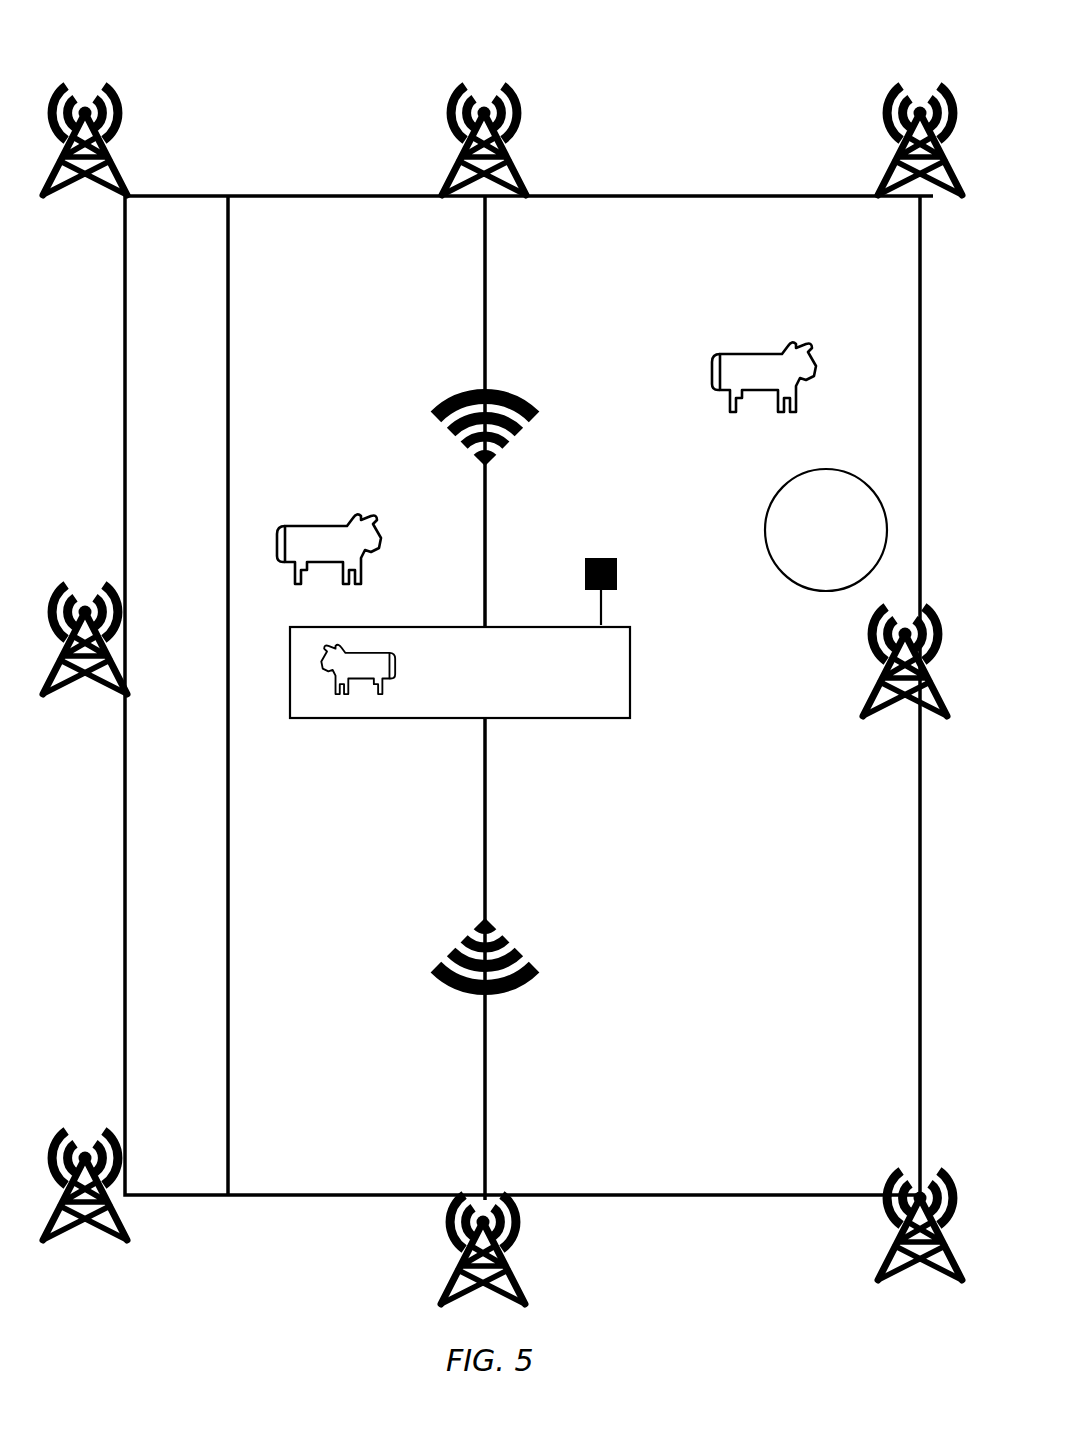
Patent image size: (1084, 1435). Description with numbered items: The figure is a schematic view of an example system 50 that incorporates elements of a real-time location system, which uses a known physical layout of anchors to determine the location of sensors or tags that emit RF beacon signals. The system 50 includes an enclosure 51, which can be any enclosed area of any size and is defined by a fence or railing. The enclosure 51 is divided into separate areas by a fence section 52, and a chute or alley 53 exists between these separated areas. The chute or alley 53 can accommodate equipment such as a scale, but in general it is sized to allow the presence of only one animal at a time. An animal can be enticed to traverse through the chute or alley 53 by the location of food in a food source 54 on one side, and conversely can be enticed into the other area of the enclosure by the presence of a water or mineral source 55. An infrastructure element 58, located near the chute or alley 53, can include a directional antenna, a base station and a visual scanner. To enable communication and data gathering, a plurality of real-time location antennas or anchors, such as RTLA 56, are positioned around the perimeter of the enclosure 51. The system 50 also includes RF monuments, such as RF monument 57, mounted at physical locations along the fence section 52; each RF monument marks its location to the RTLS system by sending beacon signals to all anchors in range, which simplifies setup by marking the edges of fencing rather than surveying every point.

The system 50 is at (757, 36).
The enclosure 51 is at (625, 196).
The fence section 52 is at (490, 307).
The chute or alley 53 is at (586, 685).
The food source 54 is at (165, 732).
The water or mineral source 55 is at (815, 581).
The real-time location antenna/anchor (RTLA) 56 is at (125, 118).
The RF monument 57 is at (525, 402).
The infrastructure element 58 is at (600, 558).